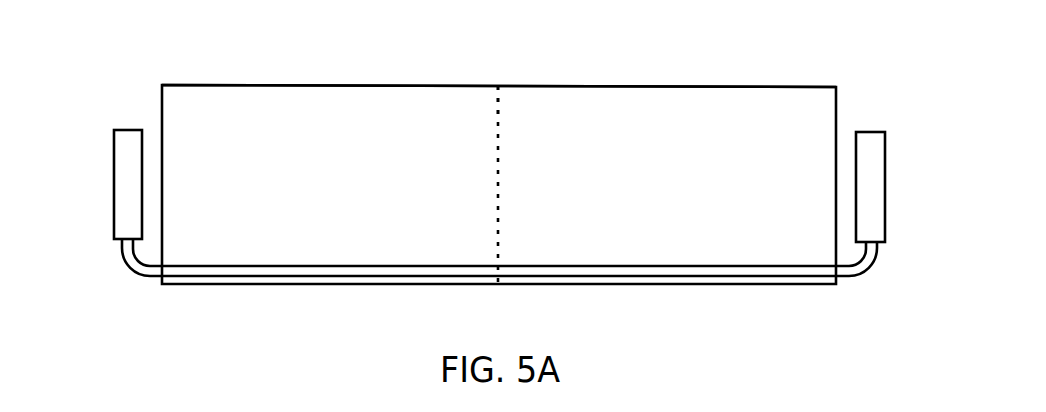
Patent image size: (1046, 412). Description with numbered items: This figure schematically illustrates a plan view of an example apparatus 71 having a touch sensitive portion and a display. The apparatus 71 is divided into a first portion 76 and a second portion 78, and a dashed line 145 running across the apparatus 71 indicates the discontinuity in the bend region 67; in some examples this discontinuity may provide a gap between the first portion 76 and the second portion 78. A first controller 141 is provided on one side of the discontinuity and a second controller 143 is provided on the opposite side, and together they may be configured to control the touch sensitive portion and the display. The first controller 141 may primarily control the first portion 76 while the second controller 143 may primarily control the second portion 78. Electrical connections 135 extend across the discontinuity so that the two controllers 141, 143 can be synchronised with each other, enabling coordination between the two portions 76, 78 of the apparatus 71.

The apparatus 71 is at (837, 87).
The bend region 67 is at (499, 89).
The first portion 76 is at (344, 93).
The second portion 78 is at (694, 95).
The dashed line 145 is at (505, 118).
The first controller 141 is at (113, 193).
The second controller 143 is at (886, 178).
The electrical connections 135 is at (525, 278).